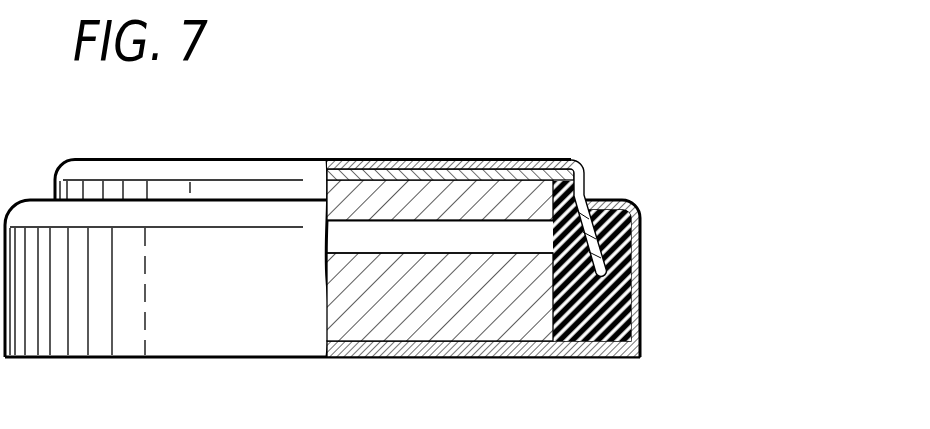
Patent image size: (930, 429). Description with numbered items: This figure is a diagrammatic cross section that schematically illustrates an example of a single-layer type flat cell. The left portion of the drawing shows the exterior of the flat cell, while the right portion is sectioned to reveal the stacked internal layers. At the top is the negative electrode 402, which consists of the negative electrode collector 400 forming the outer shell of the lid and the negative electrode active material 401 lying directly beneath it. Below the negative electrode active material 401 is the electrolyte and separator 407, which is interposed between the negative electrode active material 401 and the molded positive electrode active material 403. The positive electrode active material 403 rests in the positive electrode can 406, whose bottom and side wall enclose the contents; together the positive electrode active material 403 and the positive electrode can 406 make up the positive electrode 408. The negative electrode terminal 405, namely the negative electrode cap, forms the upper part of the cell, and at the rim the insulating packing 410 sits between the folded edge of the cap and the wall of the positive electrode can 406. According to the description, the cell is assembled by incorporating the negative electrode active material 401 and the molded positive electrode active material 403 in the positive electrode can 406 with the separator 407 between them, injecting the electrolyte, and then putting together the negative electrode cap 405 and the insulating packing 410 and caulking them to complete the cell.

The negative electrode collector 400 is at (468, 168).
The negative electrode active material 401 is at (513, 193).
The negative electrode 402 is at (455, 110).
The positive electrode active material 403 is at (527, 293).
The negative electrode terminal 405 is at (374, 160).
The positive electrode can 406 is at (623, 348).
The electrolyte and separator 407 is at (403, 247).
The positive electrode 408 is at (724, 287).
The insulating packing 410 is at (590, 203).